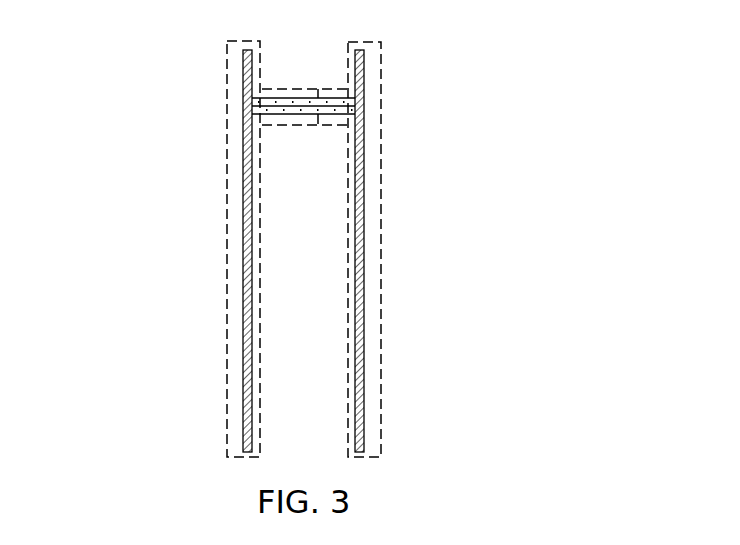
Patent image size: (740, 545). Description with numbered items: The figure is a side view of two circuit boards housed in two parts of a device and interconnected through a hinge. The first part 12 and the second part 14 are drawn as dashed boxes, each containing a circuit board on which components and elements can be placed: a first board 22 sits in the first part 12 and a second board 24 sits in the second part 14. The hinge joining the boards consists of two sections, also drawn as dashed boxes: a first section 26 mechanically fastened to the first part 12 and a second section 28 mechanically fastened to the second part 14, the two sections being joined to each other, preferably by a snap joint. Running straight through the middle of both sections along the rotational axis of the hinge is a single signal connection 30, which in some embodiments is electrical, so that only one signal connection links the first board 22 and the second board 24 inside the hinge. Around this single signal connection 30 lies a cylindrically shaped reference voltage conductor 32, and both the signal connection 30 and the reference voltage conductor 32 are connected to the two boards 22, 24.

The first part 12 is at (226, 358).
The second part 14 is at (380, 365).
The first board 22 is at (243, 232).
The second board 24 is at (363, 238).
The first section 26 is at (285, 127).
The second section 28 is at (337, 127).
The single signal connection 30 is at (327, 106).
The reference voltage conductor 32 is at (297, 99).